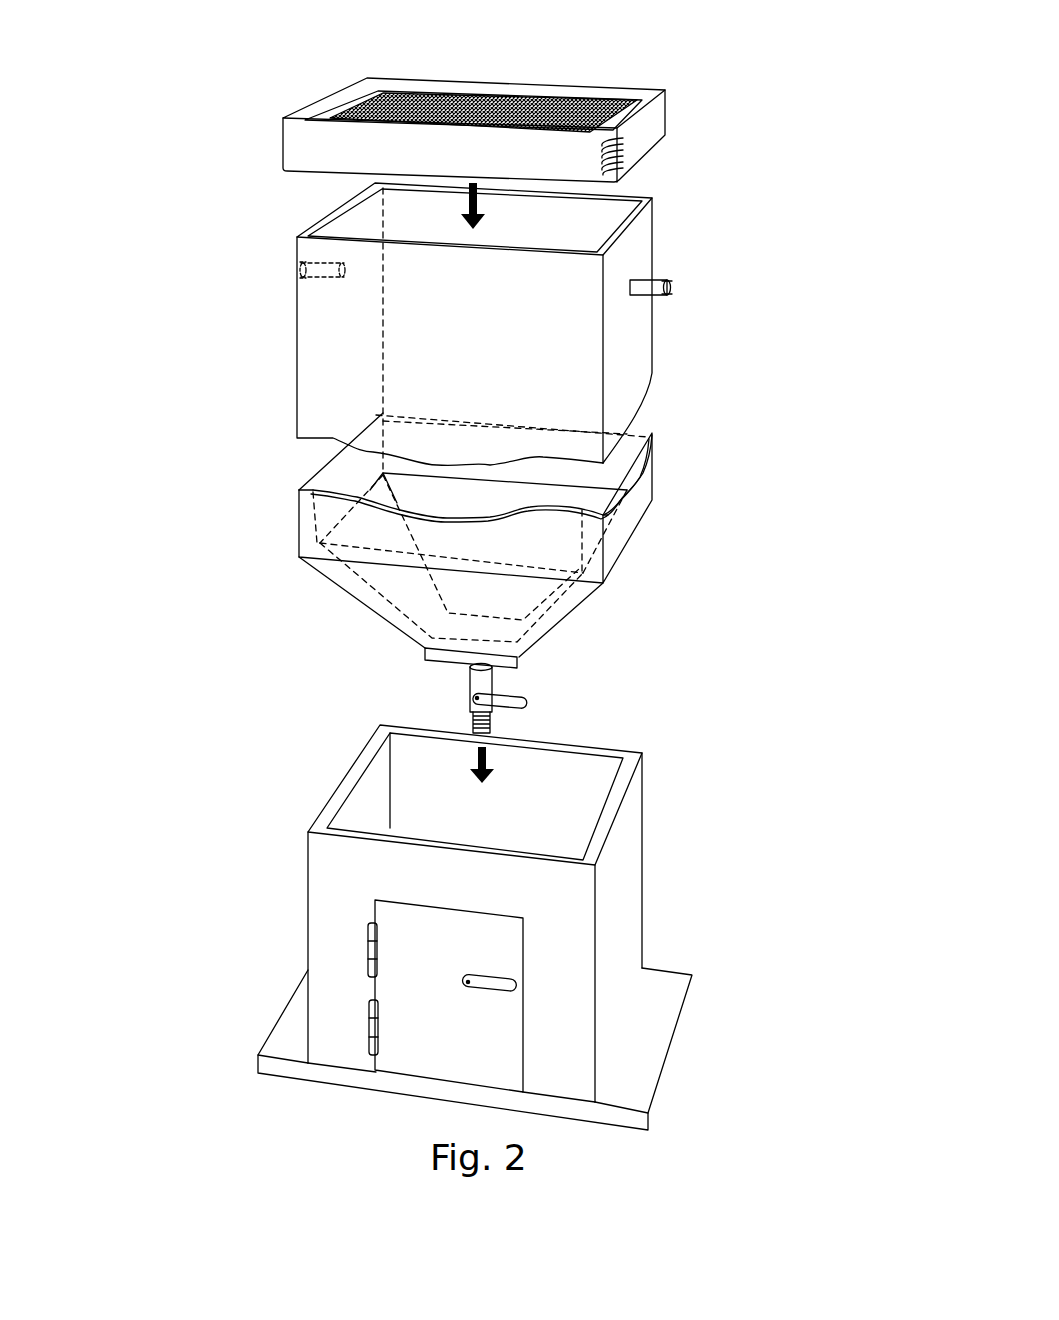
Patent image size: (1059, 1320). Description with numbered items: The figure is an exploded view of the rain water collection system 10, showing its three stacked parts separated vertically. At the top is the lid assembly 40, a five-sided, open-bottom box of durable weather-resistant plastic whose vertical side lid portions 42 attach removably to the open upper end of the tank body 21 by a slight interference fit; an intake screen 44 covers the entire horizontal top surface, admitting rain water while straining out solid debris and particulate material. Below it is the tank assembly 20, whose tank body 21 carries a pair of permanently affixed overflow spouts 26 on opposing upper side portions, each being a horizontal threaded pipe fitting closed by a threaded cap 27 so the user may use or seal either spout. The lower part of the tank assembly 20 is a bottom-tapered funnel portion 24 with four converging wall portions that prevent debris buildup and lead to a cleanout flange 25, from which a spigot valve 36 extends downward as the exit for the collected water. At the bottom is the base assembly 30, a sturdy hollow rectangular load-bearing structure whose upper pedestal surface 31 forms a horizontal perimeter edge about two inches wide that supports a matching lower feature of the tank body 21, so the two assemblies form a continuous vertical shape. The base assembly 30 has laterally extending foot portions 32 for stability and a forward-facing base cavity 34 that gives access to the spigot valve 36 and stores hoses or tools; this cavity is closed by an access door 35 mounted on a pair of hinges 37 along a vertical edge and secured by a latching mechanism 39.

The rain water collection system 10 is at (128, 89).
The tank assembly 20 is at (285, 408).
The tank body 21 is at (652, 443).
The funnel portion 24 is at (343, 583).
The cleanout flange 25 is at (507, 662).
The overflow spouts 26 is at (328, 278).
The threaded cap 27 is at (305, 261).
The base assembly 30 is at (291, 858).
The upper pedestal surface 31 is at (627, 783).
The foot portions 32 is at (300, 1027).
The base cavity 34 is at (583, 823).
The access door 35 is at (403, 943).
The spigot valve 36 is at (480, 679).
The hinges 37 is at (373, 953).
The latching mechanism 39 is at (480, 983).
The lid assembly 40 is at (261, 106).
The side lid portions 42 is at (663, 117).
The intake screen 44 is at (583, 97).